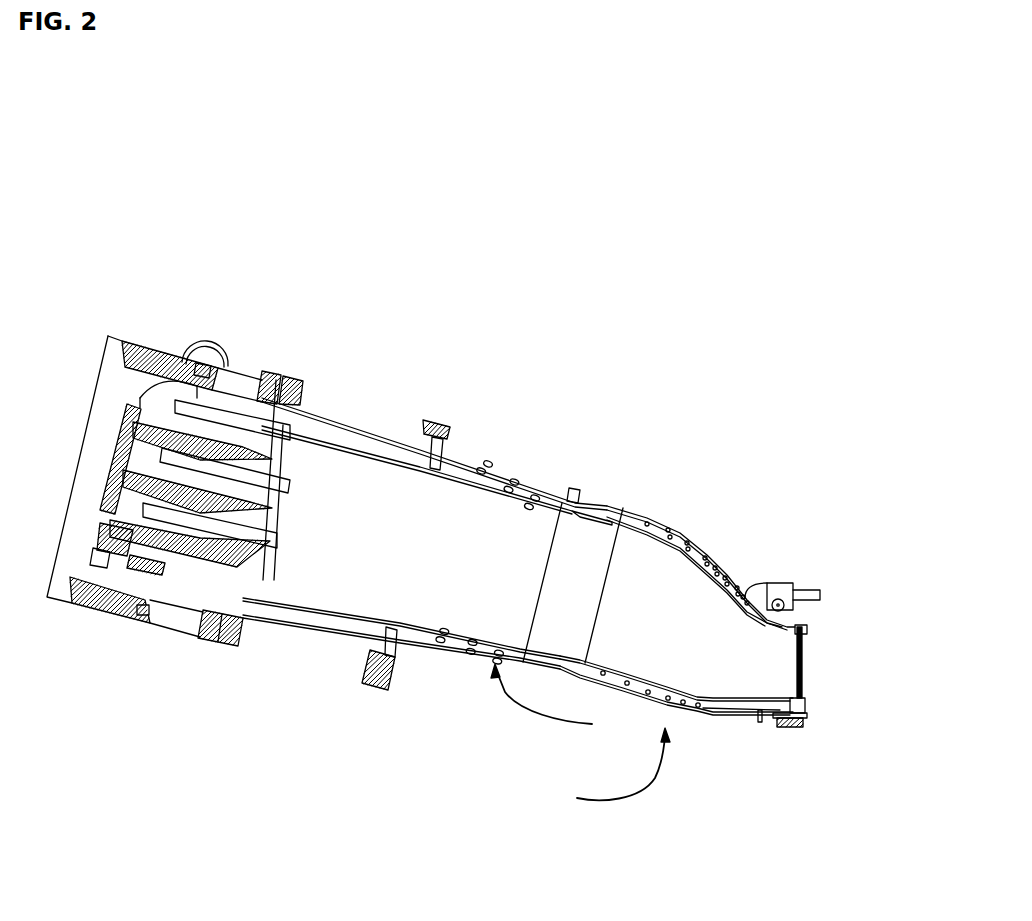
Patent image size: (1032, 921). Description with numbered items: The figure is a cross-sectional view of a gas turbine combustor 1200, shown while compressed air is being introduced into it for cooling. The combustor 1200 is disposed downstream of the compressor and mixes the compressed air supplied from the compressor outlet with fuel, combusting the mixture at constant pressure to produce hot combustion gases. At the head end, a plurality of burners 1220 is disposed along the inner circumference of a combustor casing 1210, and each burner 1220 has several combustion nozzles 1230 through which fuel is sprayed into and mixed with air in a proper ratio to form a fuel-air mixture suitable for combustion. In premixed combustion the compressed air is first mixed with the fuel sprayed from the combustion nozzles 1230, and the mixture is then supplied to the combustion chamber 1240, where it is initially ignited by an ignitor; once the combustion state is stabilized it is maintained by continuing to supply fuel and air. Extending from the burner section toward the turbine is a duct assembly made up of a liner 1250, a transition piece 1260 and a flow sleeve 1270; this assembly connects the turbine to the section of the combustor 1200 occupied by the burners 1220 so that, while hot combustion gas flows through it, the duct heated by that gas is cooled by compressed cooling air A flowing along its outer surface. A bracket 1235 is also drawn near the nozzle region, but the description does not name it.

The combustor 1200 is at (727, 276).
The combustor casing 1210 is at (237, 384).
The burner 1220 is at (97, 471).
The combustion nozzle 1230 is at (130, 543).
The nozzle support bracket 1235 is at (183, 573).
The combustion chamber 1240 is at (358, 577).
The liner 1250 is at (390, 451).
The transition piece 1260 is at (598, 505).
The flow sleeve 1270 is at (680, 527).